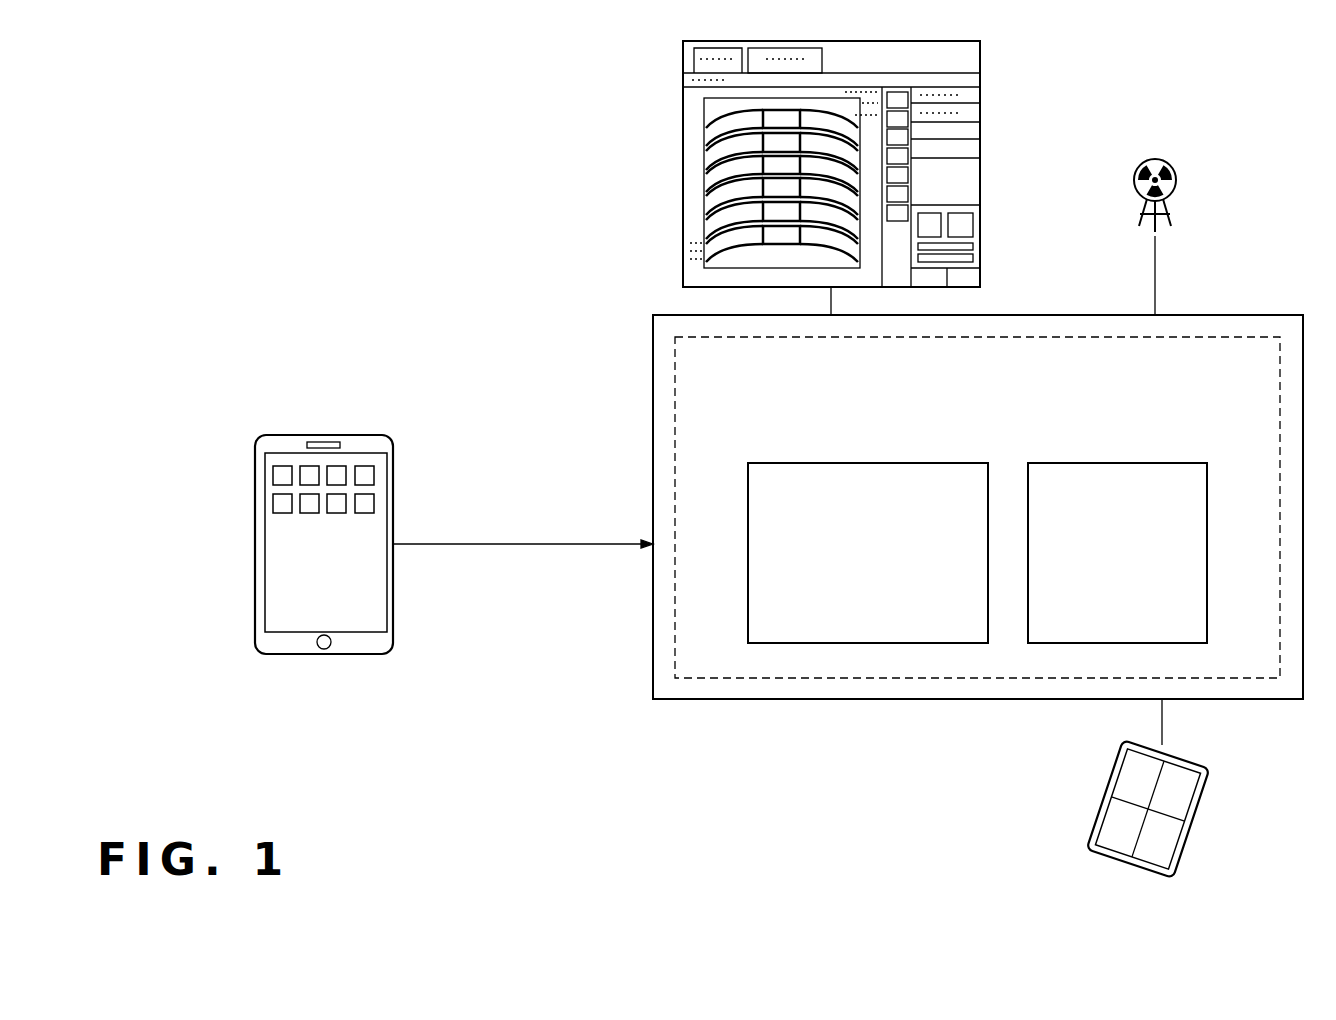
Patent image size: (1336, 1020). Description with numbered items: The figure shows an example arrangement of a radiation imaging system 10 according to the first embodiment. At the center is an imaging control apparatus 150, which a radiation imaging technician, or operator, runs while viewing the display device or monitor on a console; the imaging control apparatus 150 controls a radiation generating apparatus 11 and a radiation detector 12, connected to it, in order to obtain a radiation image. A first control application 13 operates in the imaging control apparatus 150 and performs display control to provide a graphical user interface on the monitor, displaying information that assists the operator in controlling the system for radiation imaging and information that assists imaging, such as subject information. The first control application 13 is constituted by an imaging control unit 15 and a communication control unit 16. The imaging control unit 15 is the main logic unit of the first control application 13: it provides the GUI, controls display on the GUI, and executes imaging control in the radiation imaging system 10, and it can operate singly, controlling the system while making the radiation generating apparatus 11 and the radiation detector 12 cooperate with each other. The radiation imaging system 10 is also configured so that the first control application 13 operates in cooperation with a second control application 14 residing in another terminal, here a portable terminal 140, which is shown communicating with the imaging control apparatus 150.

The radiation imaging system 10 is at (448, 216).
The radiation generating apparatus 11 is at (1176, 182).
The radiation detector 12 is at (1218, 770).
The first control application 13 is at (1052, 337).
The second control application 14 is at (270, 466).
The imaging control unit 15 is at (1040, 463).
The communication control unit 16 is at (758, 463).
The portable terminal 140 is at (355, 668).
The imaging control apparatus 150 is at (1258, 315).